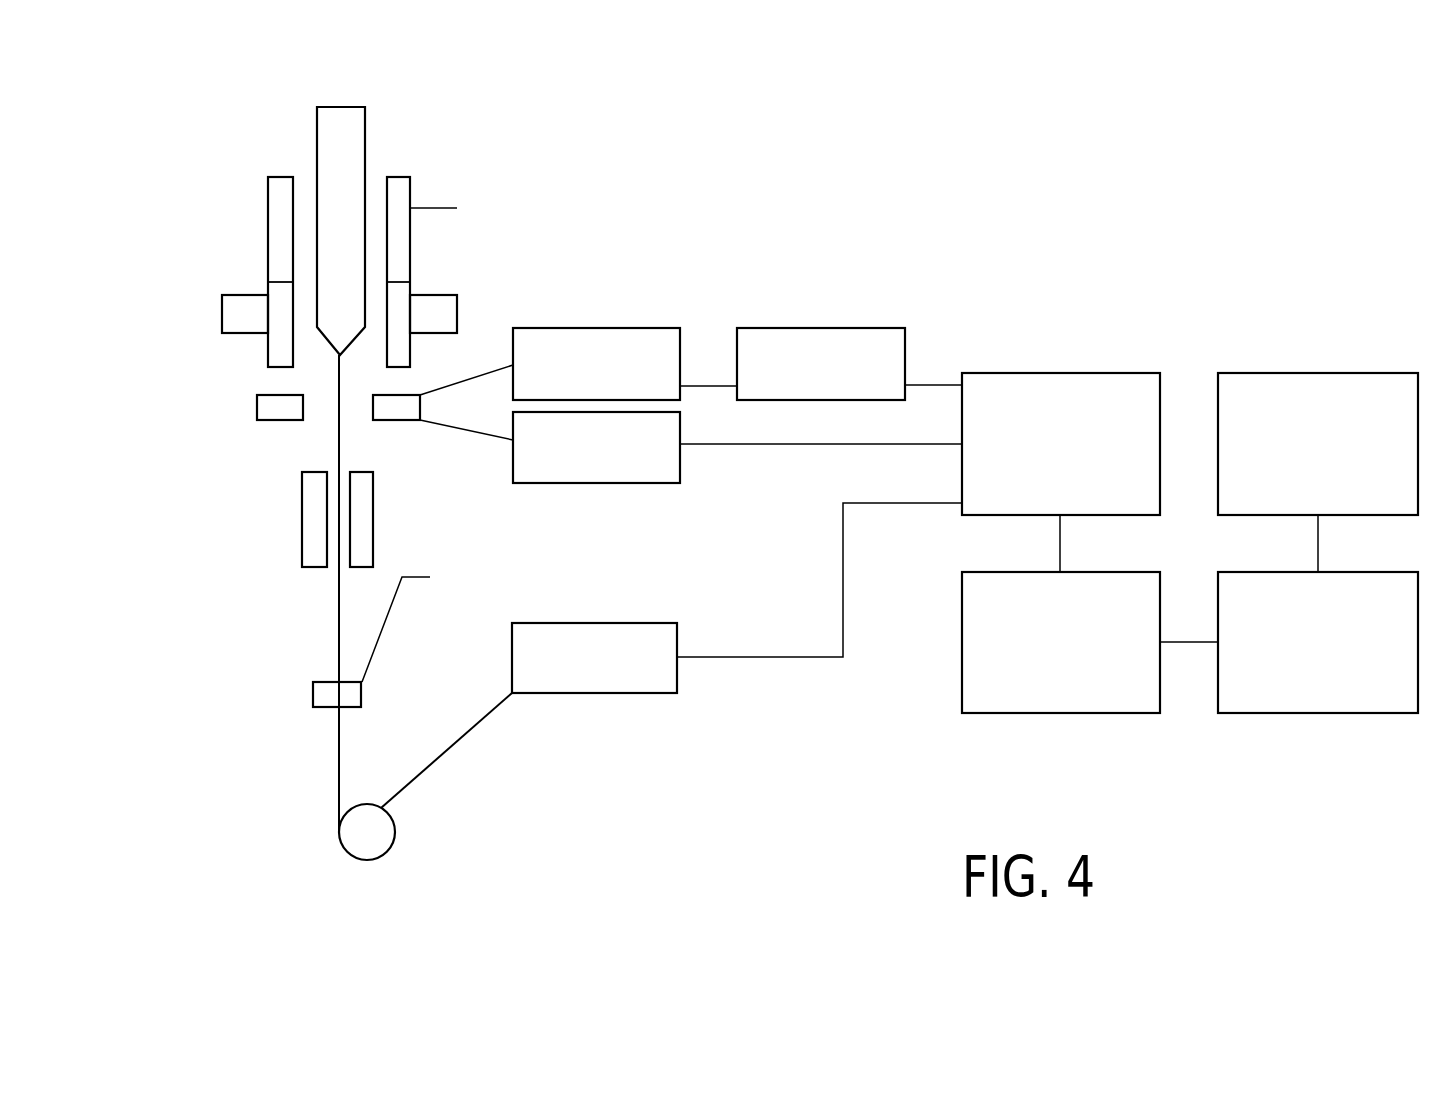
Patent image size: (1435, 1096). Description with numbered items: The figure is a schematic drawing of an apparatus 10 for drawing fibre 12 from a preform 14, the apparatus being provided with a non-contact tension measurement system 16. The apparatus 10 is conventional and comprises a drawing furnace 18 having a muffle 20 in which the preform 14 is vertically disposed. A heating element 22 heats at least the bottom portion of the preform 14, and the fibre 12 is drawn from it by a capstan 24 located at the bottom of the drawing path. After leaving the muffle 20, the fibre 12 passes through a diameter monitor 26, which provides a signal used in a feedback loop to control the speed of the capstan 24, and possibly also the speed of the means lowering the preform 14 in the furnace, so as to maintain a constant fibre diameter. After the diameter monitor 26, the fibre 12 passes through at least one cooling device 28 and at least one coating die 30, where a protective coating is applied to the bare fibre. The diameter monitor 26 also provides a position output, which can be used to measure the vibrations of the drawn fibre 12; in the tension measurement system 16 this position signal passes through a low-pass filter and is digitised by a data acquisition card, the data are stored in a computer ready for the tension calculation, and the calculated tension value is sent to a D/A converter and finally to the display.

The apparatus 10 is at (524, 97).
The fibre 12 is at (338, 626).
The preform 14 is at (365, 140).
The non-contact tension measurement system 16 is at (878, 247).
The drawing furnace 18 is at (434, 258).
The muffle 20 is at (268, 228).
The heating element 22 is at (222, 325).
The capstan 24 is at (345, 851).
The diameter monitor 26 is at (263, 413).
The cooling device 28 is at (302, 538).
The coating die 30 is at (320, 708).